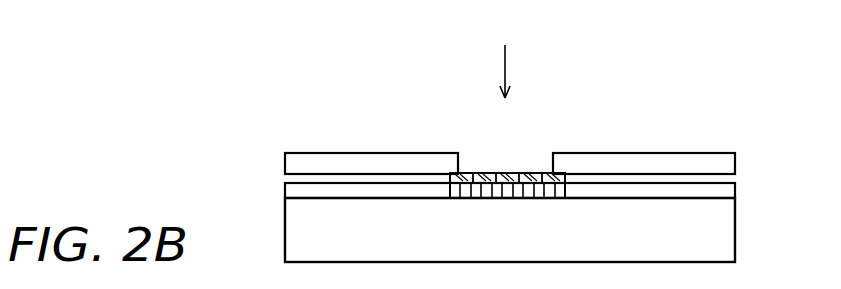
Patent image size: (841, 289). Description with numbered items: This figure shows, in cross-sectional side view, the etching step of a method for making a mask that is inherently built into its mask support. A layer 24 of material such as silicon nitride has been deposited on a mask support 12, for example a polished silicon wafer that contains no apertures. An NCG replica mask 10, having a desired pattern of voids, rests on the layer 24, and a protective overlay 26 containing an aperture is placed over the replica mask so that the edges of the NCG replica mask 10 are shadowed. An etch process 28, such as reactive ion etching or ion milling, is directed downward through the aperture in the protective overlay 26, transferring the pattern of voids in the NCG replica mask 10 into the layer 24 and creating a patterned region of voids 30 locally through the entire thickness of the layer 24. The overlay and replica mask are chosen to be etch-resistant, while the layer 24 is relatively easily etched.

The NCG replica mask 10 is at (507, 172).
The mask support 12 is at (736, 246).
The layer of material 24 is at (736, 187).
The protective overlay 26 is at (338, 152).
The etch process 28 is at (502, 59).
The patterned region of voids 30 is at (524, 199).